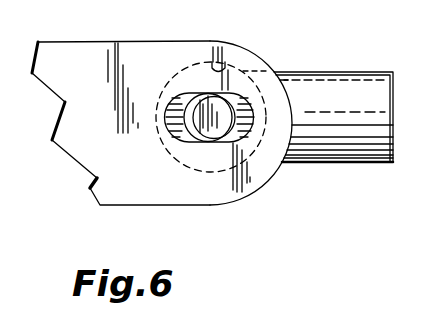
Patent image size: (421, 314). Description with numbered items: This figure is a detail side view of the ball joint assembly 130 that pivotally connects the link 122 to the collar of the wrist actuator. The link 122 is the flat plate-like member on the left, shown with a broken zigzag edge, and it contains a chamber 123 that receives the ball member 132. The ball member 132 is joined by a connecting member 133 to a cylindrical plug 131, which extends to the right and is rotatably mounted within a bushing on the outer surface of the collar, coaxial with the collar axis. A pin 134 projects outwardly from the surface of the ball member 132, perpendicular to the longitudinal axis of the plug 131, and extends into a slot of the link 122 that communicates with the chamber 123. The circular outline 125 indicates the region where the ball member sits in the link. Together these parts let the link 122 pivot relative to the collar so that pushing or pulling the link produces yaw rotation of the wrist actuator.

The link 122 is at (103, 53).
The chamber 123 is at (170, 131).
The circular recess 125 is at (237, 69).
The ball joint assembly 130 is at (346, 68).
The cylindrical plug 131 is at (321, 146).
The ball member 132 is at (197, 62).
The connecting member 133 is at (268, 70).
The pin 134 is at (200, 122).